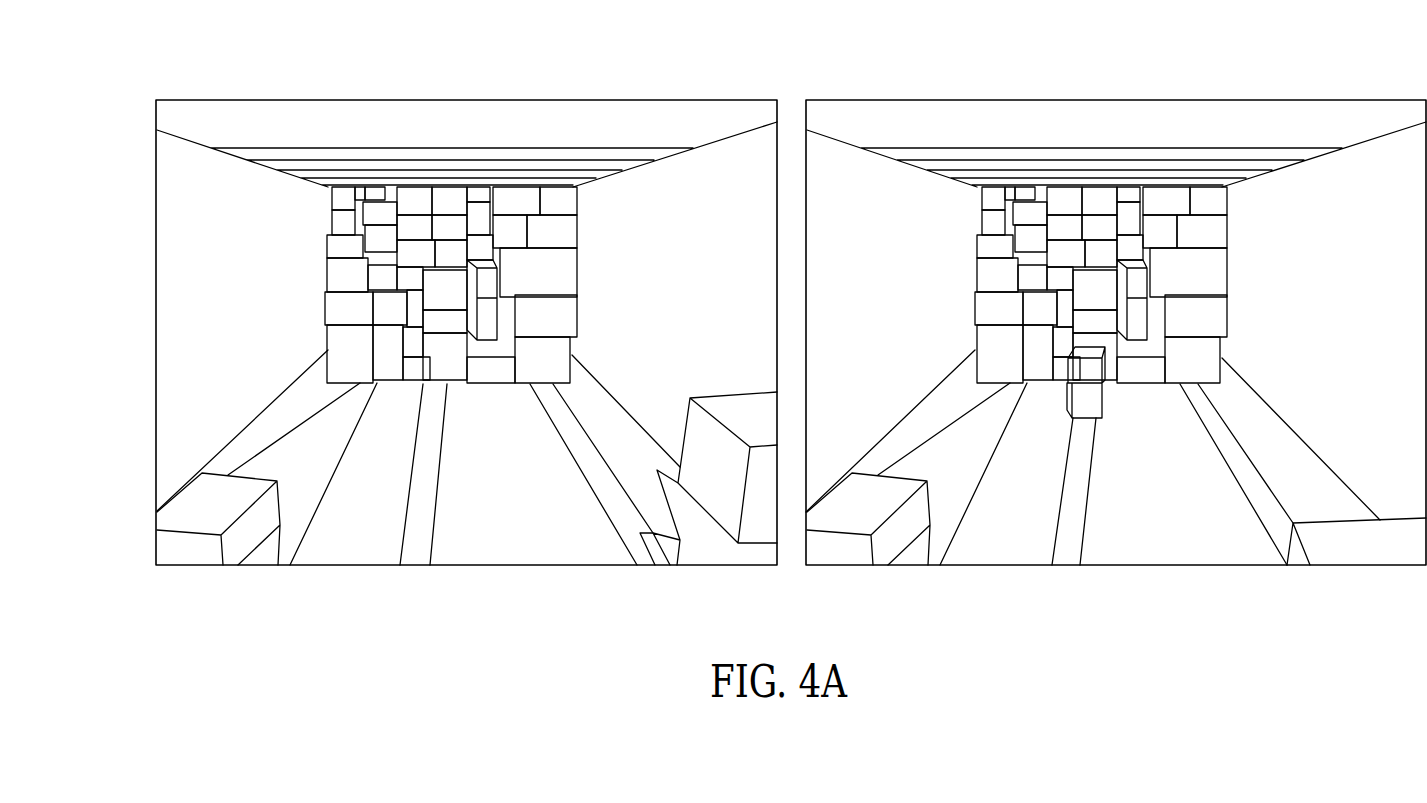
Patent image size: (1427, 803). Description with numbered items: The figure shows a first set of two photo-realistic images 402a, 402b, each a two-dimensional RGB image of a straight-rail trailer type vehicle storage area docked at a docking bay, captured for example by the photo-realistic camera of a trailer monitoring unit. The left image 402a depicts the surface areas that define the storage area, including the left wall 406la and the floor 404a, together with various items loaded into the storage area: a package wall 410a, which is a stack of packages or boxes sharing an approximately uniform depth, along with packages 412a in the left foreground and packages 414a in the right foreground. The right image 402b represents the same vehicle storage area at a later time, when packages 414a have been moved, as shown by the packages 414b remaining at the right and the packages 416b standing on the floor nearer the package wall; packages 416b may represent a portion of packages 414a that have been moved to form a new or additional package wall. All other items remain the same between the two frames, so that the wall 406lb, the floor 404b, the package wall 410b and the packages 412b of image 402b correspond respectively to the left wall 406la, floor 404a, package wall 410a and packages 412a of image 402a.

The photo-realistic image 402a is at (390, 117).
The photo-realistic image 402b is at (1047, 117).
The floor 404a is at (413, 545).
The floor 404b is at (1066, 547).
The left wall 406la is at (204, 331).
The wall 406lb is at (865, 207).
The package wall 410a is at (556, 263).
The package wall 410b is at (1207, 272).
The packages 412a is at (192, 553).
The packages 412b is at (848, 553).
The packages 414a is at (712, 553).
The packages 414b is at (1365, 555).
The packages 416b is at (1073, 412).